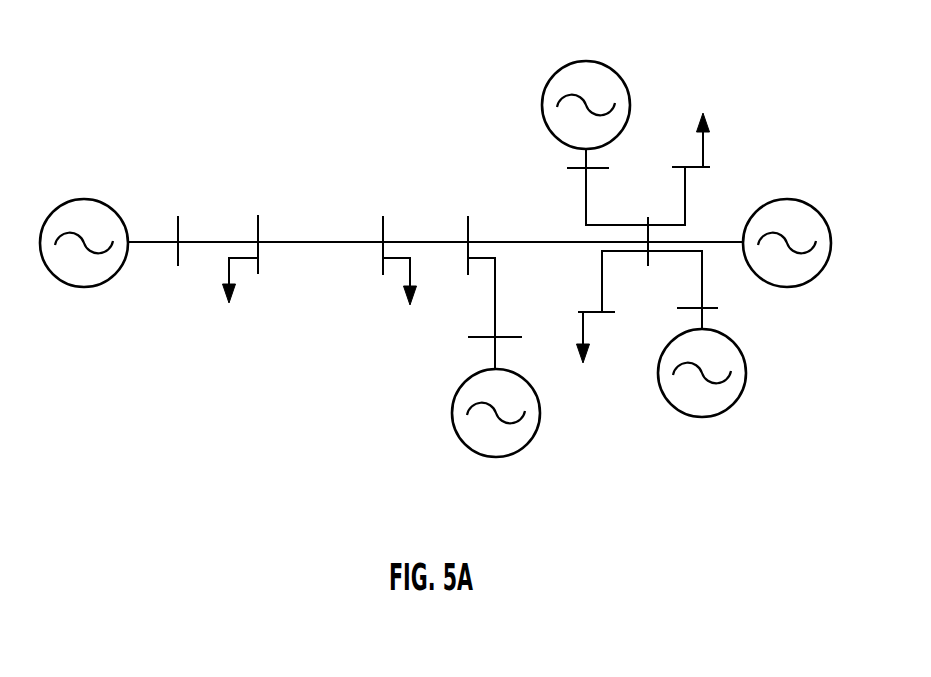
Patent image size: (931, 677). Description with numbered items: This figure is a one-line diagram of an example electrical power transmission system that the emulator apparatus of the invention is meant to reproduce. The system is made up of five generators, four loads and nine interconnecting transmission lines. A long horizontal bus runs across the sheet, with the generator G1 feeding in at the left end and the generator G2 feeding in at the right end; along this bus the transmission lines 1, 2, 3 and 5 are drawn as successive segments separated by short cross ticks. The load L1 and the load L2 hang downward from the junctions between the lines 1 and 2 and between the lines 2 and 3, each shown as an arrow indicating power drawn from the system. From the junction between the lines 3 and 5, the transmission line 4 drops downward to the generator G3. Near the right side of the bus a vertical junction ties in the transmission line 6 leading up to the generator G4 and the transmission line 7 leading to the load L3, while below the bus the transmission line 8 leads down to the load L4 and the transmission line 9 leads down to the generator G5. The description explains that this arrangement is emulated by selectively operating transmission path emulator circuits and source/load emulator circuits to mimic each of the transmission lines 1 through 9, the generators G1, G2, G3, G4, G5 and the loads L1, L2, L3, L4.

The transmission line 1 is at (218, 237).
The transmission line 2 is at (320, 241).
The transmission line 3 is at (425, 242).
The transmission line 4 is at (495, 313).
The transmission line 5 is at (558, 242).
The transmission line 6 is at (607, 187).
The transmission line 7 is at (679, 196).
The transmission line 8 is at (613, 281).
The transmission line 9 is at (683, 290).
The generator G1 is at (109, 224).
The generator G2 is at (739, 227).
The generator G3 is at (496, 432).
The generator G4 is at (586, 88).
The generator G5 is at (702, 394).
The load L1 is at (239, 300).
The load L2 is at (402, 301).
The load L3 is at (700, 123).
The load L4 is at (595, 339).